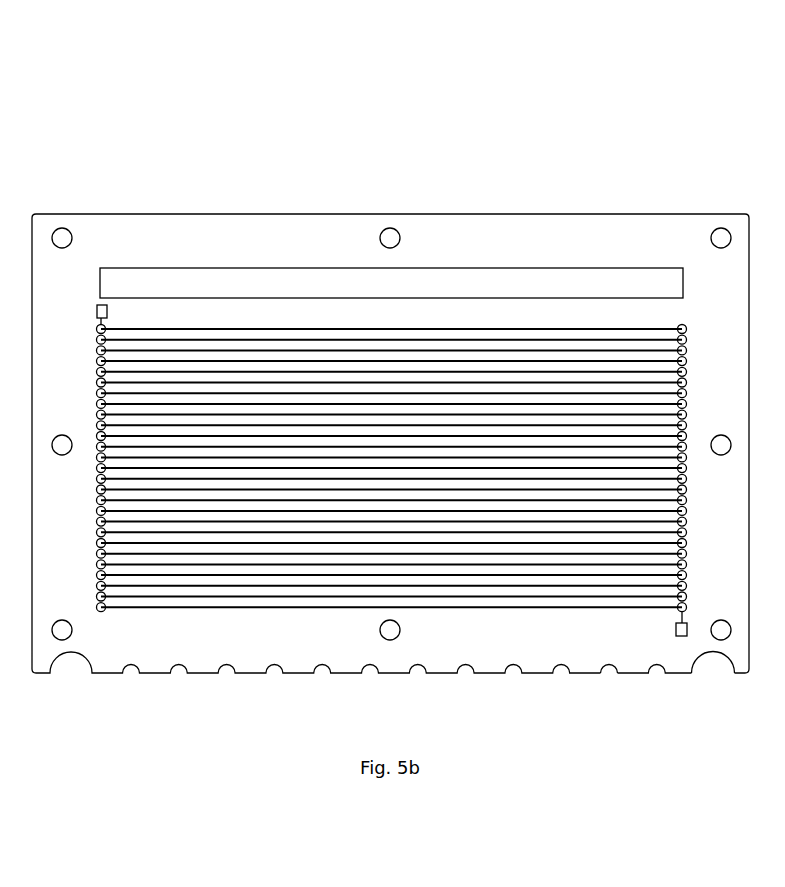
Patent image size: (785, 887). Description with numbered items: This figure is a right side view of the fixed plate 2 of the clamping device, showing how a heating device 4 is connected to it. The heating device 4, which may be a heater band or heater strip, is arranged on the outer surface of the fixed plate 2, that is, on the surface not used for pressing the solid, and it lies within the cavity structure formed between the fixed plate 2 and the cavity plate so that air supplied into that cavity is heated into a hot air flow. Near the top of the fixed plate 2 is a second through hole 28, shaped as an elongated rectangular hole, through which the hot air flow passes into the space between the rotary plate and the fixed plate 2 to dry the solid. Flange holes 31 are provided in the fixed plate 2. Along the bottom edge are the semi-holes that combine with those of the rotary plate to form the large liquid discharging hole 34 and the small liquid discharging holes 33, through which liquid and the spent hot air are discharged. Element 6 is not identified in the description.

The fixed plate 2 is at (153, 242).
The second through hole 28 is at (232, 278).
The cooling channel 6 is at (293, 400).
The heating device 4 is at (392, 332).
The small liquid discharging hole 33 is at (608, 665).
The large liquid discharging hole 34 is at (710, 665).
The flange hole 31 is at (718, 228).